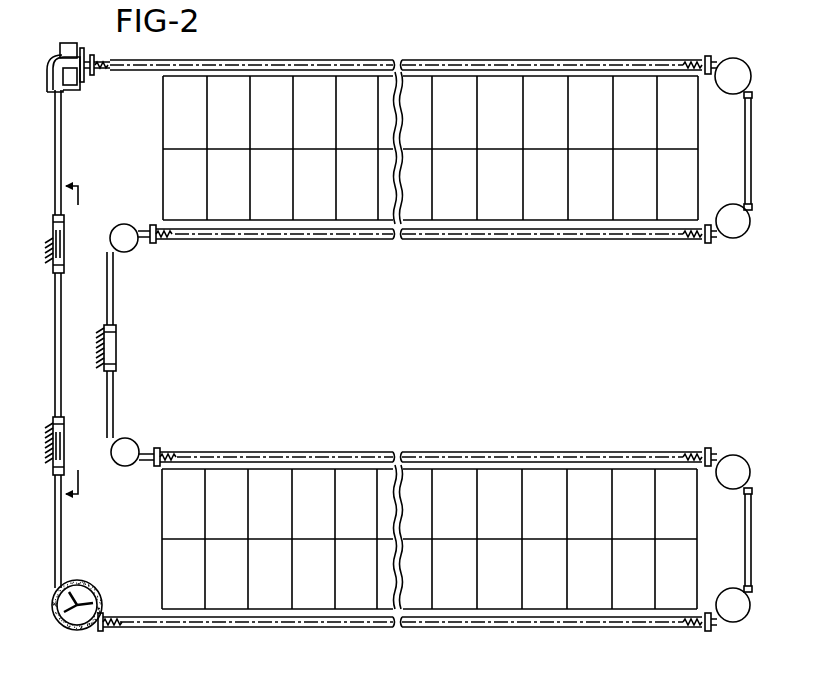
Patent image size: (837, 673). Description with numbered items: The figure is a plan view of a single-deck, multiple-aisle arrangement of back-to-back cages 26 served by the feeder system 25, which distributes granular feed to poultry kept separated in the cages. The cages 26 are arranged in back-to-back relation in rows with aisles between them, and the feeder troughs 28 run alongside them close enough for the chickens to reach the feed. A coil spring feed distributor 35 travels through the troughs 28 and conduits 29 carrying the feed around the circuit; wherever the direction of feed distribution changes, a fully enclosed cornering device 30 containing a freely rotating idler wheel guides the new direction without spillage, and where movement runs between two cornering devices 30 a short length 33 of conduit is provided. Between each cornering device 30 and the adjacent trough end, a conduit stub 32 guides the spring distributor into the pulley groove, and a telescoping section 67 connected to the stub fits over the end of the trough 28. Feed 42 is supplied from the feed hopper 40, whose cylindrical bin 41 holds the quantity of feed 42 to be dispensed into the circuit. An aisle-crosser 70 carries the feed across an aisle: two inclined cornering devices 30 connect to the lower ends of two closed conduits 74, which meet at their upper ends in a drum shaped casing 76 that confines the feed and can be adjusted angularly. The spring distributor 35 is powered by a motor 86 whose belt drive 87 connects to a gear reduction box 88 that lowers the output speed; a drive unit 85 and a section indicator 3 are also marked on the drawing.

The section line 3- 3 is at (82, 343).
The feeder system 25 is at (490, 250).
The cages 26 is at (326, 86).
The feeder troughs 28 is at (402, 59).
The conduits 29 is at (55, 337).
The cornering device 30 is at (742, 57).
The conduit stub 32 is at (710, 56).
The short length of conduit 33 is at (752, 138).
The coil spring feed distributor 35 is at (694, 59).
The feed hopper 40 is at (70, 606).
The cylindrical bin 41 is at (66, 622).
The feed 42 is at (54, 612).
The telescoping section 67 is at (93, 75).
The aisle-crosser 70 is at (120, 344).
The closed conduits 74 is at (114, 295).
The drum shaped casing 76 is at (104, 346).
The elbow fitting 85 is at (46, 61).
The motor 86 is at (68, 43).
The belt drive 87 is at (85, 57).
The gear reduction box 88 is at (72, 85).